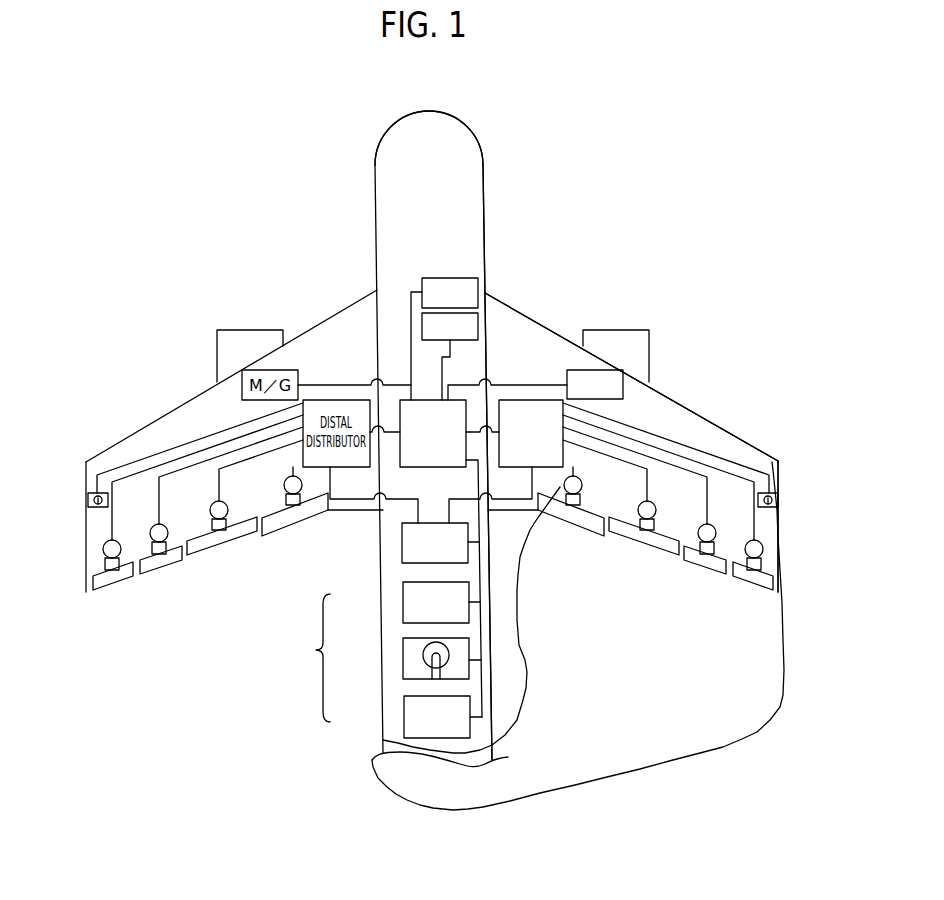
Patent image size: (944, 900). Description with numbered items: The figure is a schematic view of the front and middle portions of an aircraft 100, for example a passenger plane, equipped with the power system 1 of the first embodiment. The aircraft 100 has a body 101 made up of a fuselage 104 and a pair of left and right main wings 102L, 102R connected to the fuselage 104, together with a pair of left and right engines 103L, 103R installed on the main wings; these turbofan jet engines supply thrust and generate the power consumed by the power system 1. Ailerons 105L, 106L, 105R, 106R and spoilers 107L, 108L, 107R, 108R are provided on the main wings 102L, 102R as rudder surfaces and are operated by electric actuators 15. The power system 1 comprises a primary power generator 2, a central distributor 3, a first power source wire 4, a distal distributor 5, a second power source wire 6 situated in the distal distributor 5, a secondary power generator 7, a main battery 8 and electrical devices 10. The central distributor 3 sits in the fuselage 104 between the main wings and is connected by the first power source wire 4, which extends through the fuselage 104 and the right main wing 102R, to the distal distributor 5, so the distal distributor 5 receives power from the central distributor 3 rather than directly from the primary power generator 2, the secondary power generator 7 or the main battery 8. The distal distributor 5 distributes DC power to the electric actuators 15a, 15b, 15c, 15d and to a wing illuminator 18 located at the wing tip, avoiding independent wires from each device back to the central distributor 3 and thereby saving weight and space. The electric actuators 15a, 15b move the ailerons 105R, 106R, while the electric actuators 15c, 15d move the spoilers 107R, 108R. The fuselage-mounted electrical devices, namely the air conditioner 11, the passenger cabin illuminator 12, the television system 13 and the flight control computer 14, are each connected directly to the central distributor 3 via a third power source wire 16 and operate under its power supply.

The aircraft 100 is at (603, 209).
The body 101 is at (484, 191).
The fuselage 104 is at (484, 231).
The left main wing 102L is at (322, 324).
The right main wing 102R is at (548, 329).
The left engine 103L is at (243, 330).
The right engine 103R is at (631, 330).
The secondary power generator 7 is at (481, 293).
The main battery 8 is at (481, 323).
The central distributor 3 is at (421, 398).
The first power source wire 4 is at (475, 428).
The power system 1 is at (733, 457).
The primary power generator 2 is at (623, 387).
The distal distributor 5 is at (565, 402).
The second power source wire 6 is at (645, 438).
The left aileron 105L is at (120, 584).
The left aileron 106L is at (177, 573).
The left spoiler 107L is at (245, 548).
The left spoiler 108L is at (313, 523).
The right aileron 105R is at (748, 584).
The right aileron 106R is at (693, 568).
The right spoiler 107R is at (625, 546).
The right spoiler 108R is at (558, 522).
The electric actuator 15a is at (775, 585).
The electric actuator 15b is at (727, 558).
The electric actuator 15c is at (663, 542).
The electric actuator 15d is at (590, 523).
The flight control computer 14 is at (402, 545).
The television system 13 is at (403, 602).
The passenger cabin illuminator 12 is at (403, 657).
The air conditioner 11 is at (403, 717).
The electric actuators 15 is at (388, 742).
The wing illuminator 18 is at (372, 760).
The electrical devices 10 is at (308, 658).
The third power source wire 16 is at (483, 647).